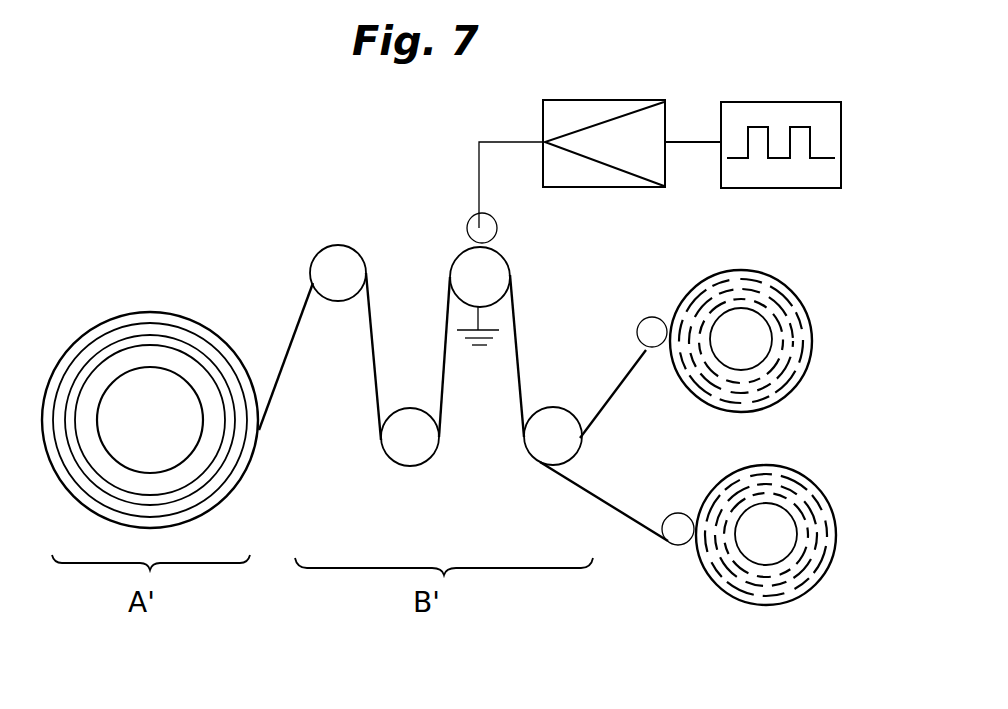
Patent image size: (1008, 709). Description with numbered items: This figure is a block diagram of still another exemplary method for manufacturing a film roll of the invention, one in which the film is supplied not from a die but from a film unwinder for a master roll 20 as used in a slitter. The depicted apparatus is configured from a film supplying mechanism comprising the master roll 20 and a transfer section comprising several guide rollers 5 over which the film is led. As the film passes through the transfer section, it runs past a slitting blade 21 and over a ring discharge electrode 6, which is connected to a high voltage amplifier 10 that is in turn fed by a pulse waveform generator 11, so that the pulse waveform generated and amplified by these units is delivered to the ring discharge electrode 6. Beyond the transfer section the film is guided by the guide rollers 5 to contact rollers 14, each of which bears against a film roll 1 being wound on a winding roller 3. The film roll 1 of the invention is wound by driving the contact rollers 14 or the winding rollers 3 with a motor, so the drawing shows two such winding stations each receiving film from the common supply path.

The film roll 1 is at (791, 416).
The winding roller 3 is at (781, 486).
The guide roller 5 is at (410, 345).
The ring discharge electrode 6 is at (525, 243).
The high voltage amplifier 10 is at (632, 127).
The pulse waveform generator 11 is at (781, 129).
The contact roller 14 is at (632, 404).
The master roll 20 is at (145, 374).
The slitting blade 21 is at (463, 407).